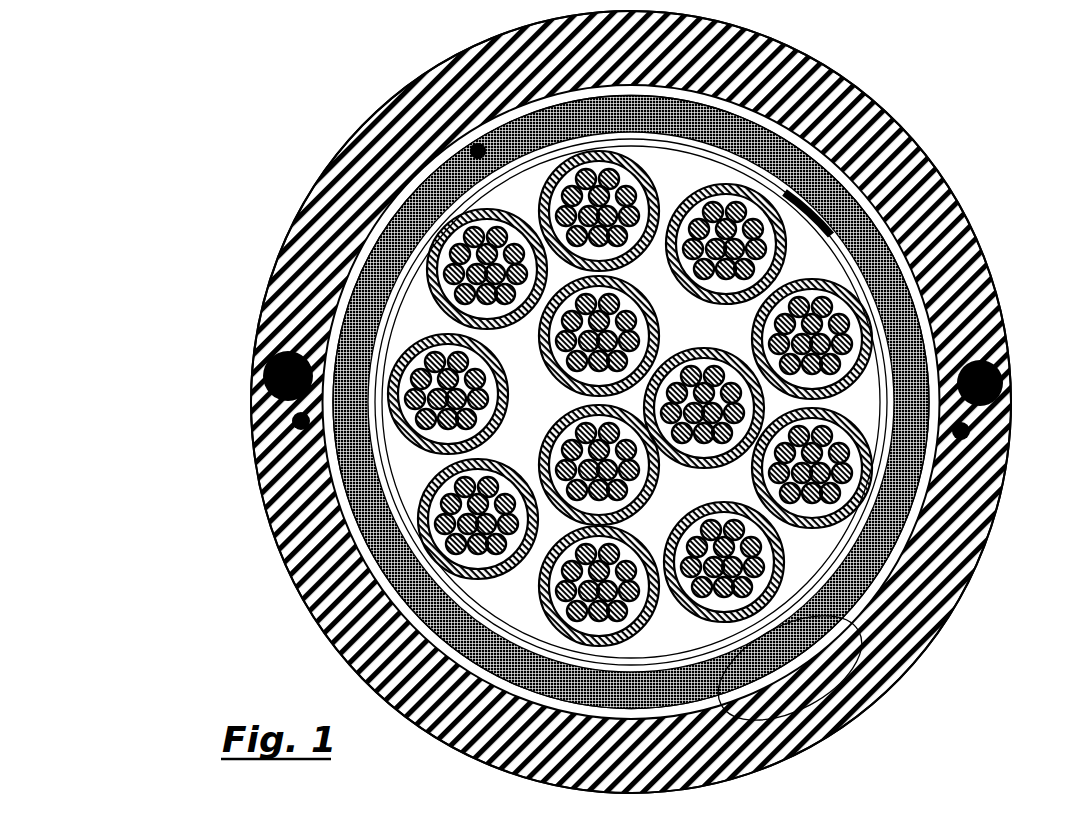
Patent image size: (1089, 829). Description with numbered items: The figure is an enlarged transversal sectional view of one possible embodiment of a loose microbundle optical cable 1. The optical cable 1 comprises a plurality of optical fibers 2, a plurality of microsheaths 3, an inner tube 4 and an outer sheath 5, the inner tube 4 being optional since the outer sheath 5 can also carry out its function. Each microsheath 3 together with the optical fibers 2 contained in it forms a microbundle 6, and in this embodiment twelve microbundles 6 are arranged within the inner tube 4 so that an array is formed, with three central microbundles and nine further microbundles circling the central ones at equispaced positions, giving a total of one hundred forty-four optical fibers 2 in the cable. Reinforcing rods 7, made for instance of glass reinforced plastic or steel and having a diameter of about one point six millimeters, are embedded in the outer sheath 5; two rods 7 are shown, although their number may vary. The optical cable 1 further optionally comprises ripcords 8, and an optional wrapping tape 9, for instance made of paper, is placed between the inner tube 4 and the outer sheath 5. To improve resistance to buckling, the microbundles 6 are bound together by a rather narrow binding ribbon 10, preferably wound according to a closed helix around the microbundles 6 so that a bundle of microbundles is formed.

The loose microbundle optical cable 1 is at (285, 133).
The optical fibers 2 is at (712, 174).
The microsheath 3 is at (400, 286).
The inner tube 4 is at (775, 590).
The outer sheath 5 is at (882, 362).
The microbundle 6 is at (712, 637).
The reinforcing rods 7 is at (252, 388).
The ripcords 8 is at (284, 421).
The wrapping tape 9 is at (343, 260).
The binding ribbon 10 is at (784, 157).